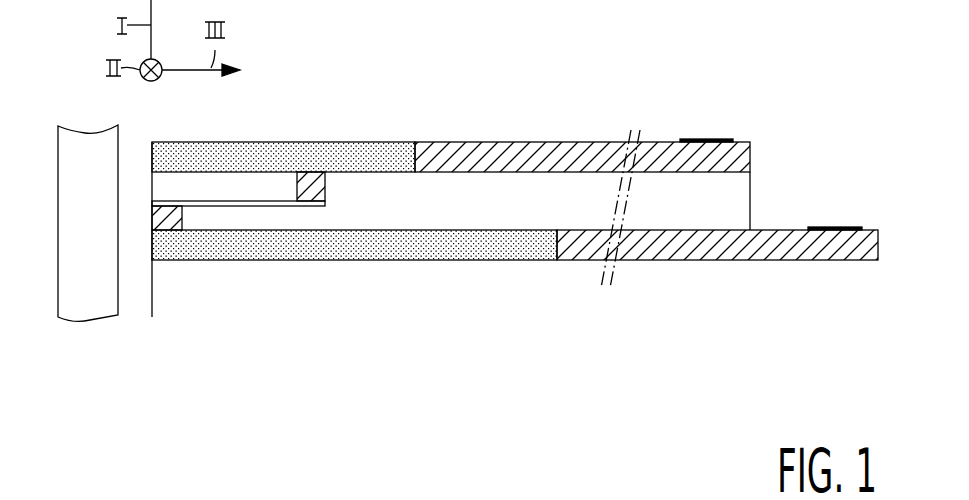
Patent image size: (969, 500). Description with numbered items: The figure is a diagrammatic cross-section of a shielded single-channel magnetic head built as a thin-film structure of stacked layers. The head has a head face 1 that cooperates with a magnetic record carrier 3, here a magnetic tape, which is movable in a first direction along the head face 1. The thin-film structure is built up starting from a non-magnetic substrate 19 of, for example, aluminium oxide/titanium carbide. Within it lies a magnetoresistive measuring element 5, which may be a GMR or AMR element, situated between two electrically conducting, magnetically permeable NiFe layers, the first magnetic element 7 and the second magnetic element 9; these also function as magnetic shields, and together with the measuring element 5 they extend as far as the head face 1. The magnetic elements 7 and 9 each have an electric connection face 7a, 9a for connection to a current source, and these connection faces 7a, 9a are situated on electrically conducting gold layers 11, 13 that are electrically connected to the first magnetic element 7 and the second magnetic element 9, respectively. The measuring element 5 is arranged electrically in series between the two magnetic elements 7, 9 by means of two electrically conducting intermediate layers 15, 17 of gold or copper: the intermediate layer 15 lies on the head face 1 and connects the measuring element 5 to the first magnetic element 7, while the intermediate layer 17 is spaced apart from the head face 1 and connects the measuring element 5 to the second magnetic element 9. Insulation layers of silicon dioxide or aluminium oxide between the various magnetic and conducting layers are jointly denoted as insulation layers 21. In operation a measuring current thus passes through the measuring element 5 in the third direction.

The head face 1 is at (151, 276).
The magnetic record carrier 3 is at (82, 312).
The magnetoresistive measuring element 5 is at (273, 207).
The first magnetic element 7 is at (432, 250).
The electric connection face 7a is at (842, 227).
The second magnetic element 9 is at (357, 152).
The electric connection face 9a is at (703, 139).
The electrically conducting layer 11 is at (704, 251).
The electrically conducting layer 13 is at (487, 156).
The electrically conducting intermediate layer 15 is at (173, 222).
The electrically conducting intermediate layer 17 is at (320, 187).
The non-magnetic substrate 19 is at (166, 300).
The insulation layers 21 is at (750, 200).